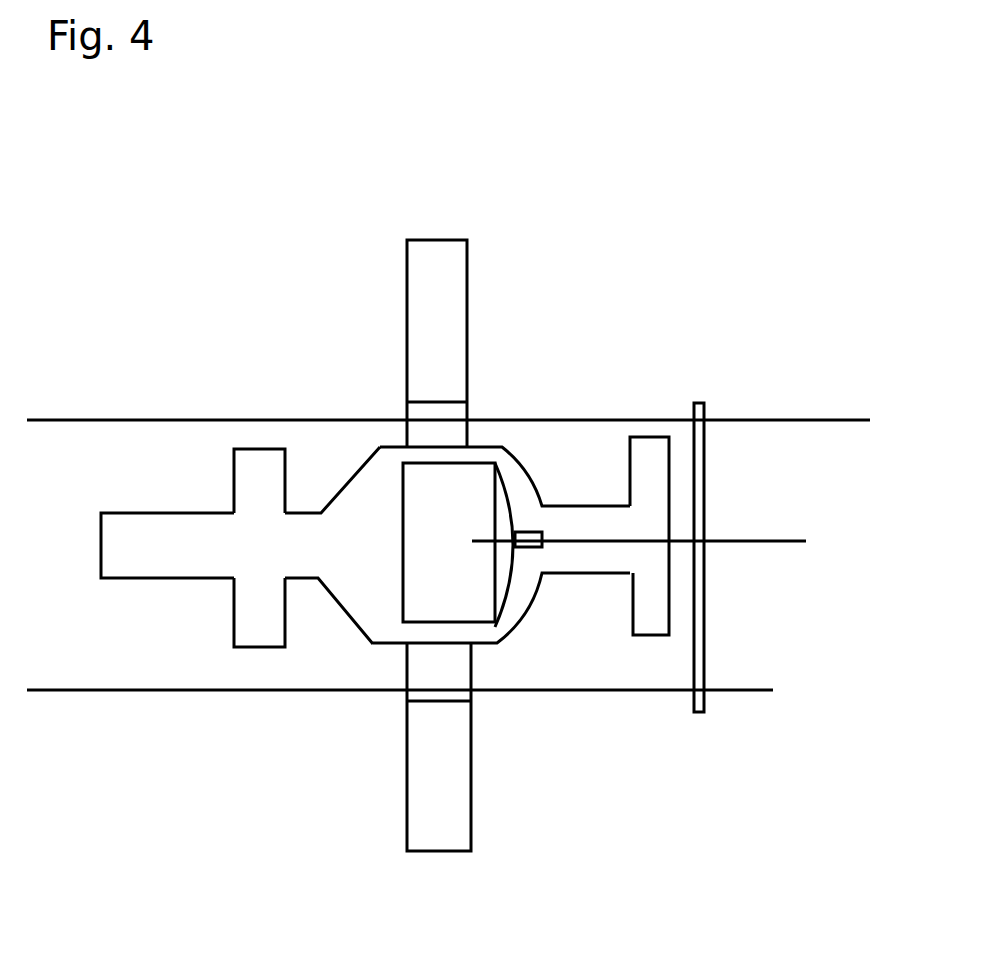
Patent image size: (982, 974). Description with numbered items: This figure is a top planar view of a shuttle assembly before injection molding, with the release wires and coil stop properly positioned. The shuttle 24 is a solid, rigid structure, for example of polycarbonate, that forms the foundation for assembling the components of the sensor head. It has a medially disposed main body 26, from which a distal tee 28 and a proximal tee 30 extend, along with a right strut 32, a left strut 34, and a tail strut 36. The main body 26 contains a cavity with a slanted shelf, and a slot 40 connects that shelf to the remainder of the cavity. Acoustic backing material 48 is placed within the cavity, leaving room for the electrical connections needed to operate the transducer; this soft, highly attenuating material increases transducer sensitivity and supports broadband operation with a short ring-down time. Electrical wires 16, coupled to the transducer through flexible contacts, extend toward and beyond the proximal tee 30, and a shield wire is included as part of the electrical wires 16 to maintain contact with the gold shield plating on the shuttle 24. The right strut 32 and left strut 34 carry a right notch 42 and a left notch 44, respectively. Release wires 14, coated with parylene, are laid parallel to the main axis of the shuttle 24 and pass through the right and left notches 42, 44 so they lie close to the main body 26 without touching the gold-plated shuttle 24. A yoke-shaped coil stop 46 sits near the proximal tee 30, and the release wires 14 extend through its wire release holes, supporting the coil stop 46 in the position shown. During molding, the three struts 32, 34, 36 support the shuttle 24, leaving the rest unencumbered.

The release wires 14 is at (770, 420).
The electrical wires 16 is at (737, 541).
The shuttle 24 is at (332, 595).
The main body 26 is at (369, 591).
The distal tee 28 is at (259, 629).
The proximal tee 30 is at (656, 622).
The right strut 32 is at (428, 815).
The left strut 34 is at (448, 270).
The tail strut 36 is at (131, 564).
The slot 40 is at (538, 531).
The right notch 42 is at (438, 693).
The left notch 44 is at (455, 410).
The coil stop 46 is at (697, 657).
The acoustic backing material 48 is at (437, 487).